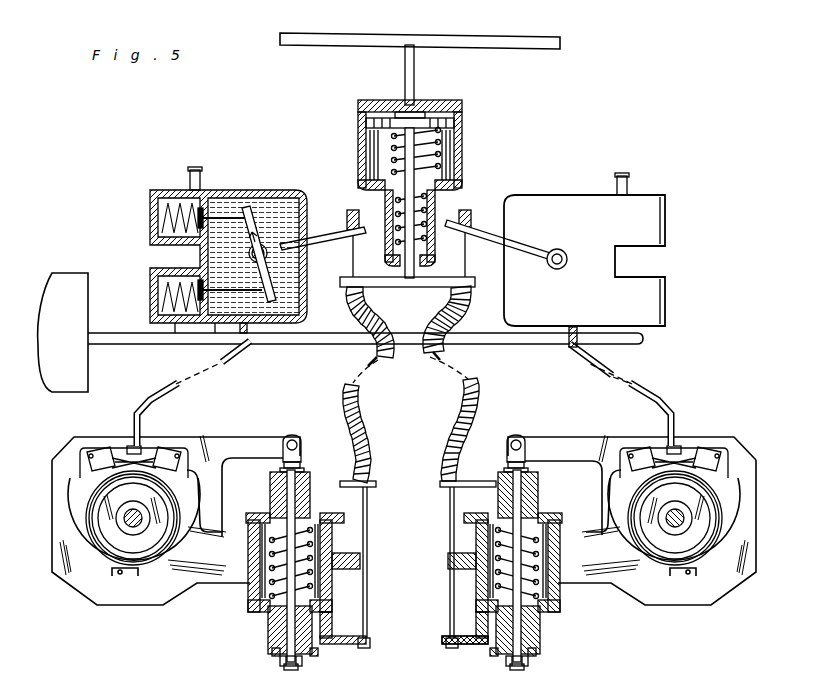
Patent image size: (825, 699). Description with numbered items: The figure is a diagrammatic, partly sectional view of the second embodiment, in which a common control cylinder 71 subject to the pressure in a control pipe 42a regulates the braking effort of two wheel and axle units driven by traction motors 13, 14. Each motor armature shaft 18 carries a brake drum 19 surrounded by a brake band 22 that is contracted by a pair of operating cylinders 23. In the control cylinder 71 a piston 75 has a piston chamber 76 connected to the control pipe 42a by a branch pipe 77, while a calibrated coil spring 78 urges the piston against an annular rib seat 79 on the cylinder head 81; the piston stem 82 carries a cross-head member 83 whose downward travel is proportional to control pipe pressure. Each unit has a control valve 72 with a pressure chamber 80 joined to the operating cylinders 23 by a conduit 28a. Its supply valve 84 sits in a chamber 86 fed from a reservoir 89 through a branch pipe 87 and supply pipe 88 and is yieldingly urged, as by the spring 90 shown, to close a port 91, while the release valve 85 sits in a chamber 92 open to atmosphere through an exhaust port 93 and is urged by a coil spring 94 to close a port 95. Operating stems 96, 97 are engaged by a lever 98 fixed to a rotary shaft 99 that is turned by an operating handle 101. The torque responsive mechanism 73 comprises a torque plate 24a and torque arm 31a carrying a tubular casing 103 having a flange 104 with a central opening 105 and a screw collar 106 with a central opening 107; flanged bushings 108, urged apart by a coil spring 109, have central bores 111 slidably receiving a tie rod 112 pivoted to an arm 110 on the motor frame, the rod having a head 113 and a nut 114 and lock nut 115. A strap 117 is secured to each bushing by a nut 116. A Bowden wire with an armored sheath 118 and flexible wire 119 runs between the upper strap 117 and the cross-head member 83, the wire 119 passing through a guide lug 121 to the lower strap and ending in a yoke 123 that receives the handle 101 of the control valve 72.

The traction motor 13 is at (118, 607).
The traction motor 14 is at (668, 607).
The motor armature shaft 18 is at (136, 514).
The brake drum 19 is at (96, 527).
The brake band 22 is at (90, 512).
The operating cylinders 23 is at (104, 450).
The torque plate 24a is at (90, 482).
The pipe or conduit 28a is at (153, 390).
The torque arm 31a is at (240, 540).
The control pipe 42a is at (381, 44).
The control cylinder 71 is at (356, 133).
The control valve 72 is at (290, 189).
The torque responsive mechanism 73 is at (291, 434).
The piston 75 is at (416, 122).
The piston chamber 76 is at (401, 112).
The branch pipe 77 is at (405, 62).
The calibrated coil spring 78 is at (422, 148).
The annular rib seat 79 is at (442, 118).
The pressure chamber 80 is at (243, 200).
The cylinder head 81 is at (364, 102).
The stem 82 is at (405, 268).
The cross-head member 83 is at (400, 287).
The supply valve 84 is at (198, 272).
The release valve 85 is at (186, 204).
The chamber 86 is at (158, 280).
The branch pipe 87 is at (170, 331).
The supply pipe 88 is at (118, 344).
The reservoir 89 is at (80, 273).
The lower spring 90 is at (158, 296).
The port 91 is at (232, 280).
The chamber 92 is at (152, 200).
The exhaust port 93 is at (195, 167).
The coil spring 94 is at (158, 218).
The port 95 is at (205, 206).
The operating stem 96 is at (243, 290).
The operating stem 97 is at (224, 231).
The lever 98 is at (265, 226).
The rotary pin or shaft 99 is at (564, 254).
The operating arm or handle 101 is at (333, 238).
The tubular casing 103 is at (252, 568).
The inwardly extending flange 104 is at (330, 618).
The central opening 105 is at (262, 592).
The screw collar 106 is at (334, 526).
The central opening 107 is at (270, 500).
The flanged bushings 108 is at (272, 482).
The coil spring 109 is at (314, 556).
The arm 110 is at (232, 441).
The central bores 111 is at (312, 498).
The tie rod 112 is at (282, 668).
The head 113 is at (293, 670).
The nut 114 is at (305, 472).
The lock nut 115 is at (301, 463).
The nut 116 is at (274, 652).
The strap 117 is at (368, 490).
The armored sheath 118 is at (432, 357).
The flexible wire 119 is at (351, 264).
The guide lug 121 is at (348, 570).
The yoke 123 is at (352, 209).